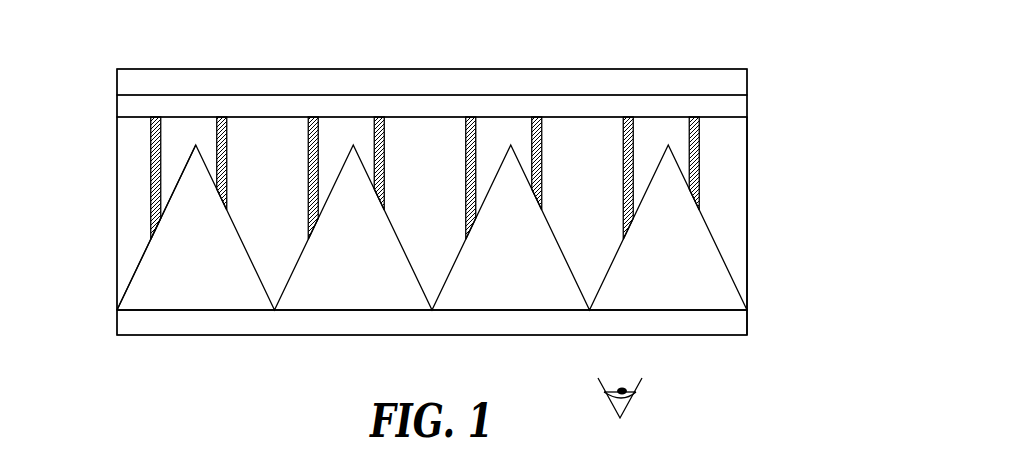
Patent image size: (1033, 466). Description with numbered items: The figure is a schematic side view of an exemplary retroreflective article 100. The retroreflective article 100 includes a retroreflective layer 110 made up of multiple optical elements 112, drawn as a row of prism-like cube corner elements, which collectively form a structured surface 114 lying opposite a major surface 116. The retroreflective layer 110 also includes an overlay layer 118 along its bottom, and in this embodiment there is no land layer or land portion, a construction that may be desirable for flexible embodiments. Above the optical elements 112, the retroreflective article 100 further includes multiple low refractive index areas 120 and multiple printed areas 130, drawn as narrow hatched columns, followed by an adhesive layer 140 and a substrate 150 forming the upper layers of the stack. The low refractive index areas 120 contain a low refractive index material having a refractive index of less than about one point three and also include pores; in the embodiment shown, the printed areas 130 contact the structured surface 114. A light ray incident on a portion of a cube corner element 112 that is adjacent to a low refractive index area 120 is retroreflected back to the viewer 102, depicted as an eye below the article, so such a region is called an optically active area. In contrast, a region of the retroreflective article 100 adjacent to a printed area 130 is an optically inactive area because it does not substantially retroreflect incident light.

The retroreflective article 100 is at (652, 50).
The viewer 102 is at (645, 403).
The retroreflective layer 110 is at (762, 147).
The optical elements 112 is at (147, 280).
The structured surface 114 is at (145, 250).
The major surface 116 is at (193, 310).
The overlay layer 118 is at (125, 323).
The low refractive index areas 120 is at (125, 148).
The printed areas 130 is at (155, 168).
The adhesive layer 140 is at (125, 109).
The substrate 150 is at (125, 79).